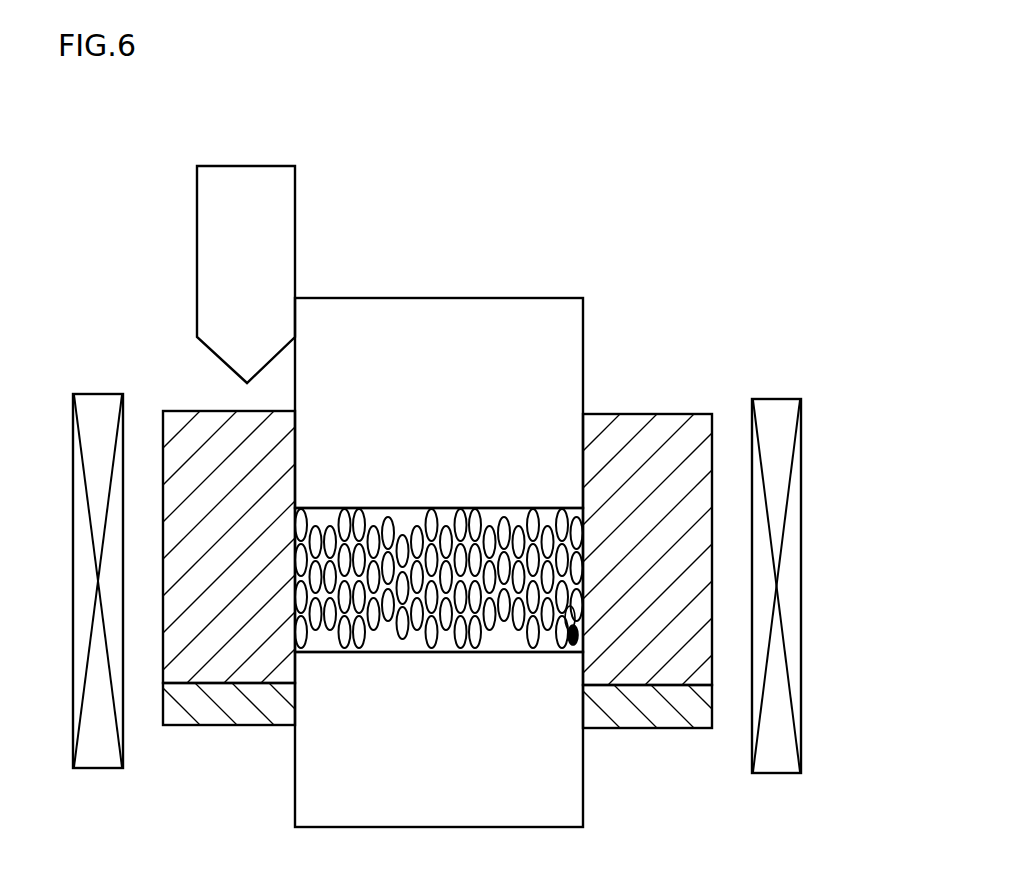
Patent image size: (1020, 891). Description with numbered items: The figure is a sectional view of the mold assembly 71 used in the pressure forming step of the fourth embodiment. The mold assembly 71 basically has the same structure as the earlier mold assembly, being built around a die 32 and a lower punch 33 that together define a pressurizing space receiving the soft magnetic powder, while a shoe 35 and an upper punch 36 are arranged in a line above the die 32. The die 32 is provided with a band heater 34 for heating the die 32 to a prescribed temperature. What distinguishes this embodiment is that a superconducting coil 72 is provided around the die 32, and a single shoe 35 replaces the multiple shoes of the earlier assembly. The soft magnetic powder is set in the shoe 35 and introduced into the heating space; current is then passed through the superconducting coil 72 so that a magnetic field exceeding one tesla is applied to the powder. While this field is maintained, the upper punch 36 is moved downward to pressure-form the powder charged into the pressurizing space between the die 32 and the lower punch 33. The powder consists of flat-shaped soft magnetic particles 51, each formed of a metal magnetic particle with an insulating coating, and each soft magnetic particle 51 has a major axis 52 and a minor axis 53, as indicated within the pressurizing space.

The mold assembly 71 is at (693, 162).
The superconducting coil 72 is at (802, 587).
The shoe 35 is at (247, 227).
The upper punch 36 is at (443, 324).
The die 32 is at (650, 448).
The band heater 34 is at (228, 707).
The lower punch 33 is at (432, 792).
The soft magnetic particle 51 is at (350, 640).
The major axis 52 is at (558, 645).
The minor axis 53 is at (576, 645).